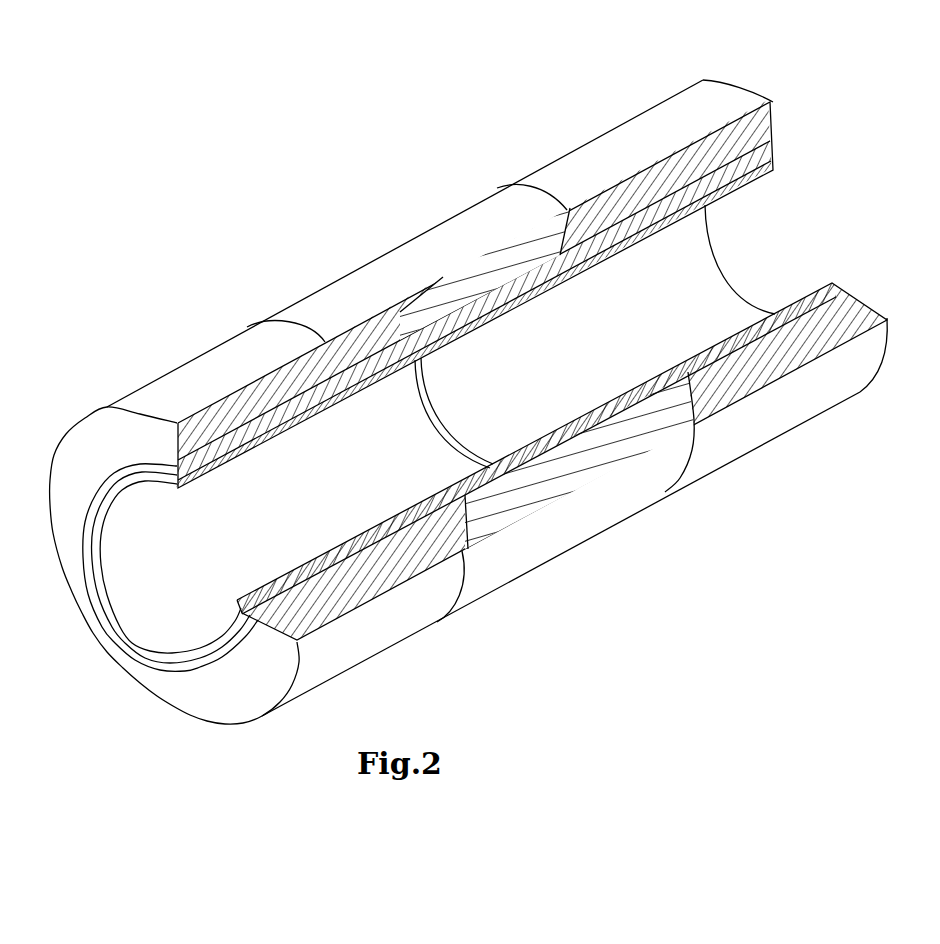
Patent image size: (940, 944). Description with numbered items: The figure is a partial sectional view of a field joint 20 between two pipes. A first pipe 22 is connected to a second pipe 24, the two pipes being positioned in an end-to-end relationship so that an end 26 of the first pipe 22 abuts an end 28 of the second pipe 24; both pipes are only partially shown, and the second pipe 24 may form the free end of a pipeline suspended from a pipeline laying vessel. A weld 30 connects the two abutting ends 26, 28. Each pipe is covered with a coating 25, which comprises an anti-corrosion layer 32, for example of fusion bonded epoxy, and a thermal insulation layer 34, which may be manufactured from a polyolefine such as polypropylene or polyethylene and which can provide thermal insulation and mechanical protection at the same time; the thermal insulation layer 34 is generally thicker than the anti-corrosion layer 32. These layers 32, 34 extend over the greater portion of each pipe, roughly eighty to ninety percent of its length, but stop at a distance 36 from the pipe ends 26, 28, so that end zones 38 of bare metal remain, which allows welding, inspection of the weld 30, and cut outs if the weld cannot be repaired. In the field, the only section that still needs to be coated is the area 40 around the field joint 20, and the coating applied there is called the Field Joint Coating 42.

The field joint 20 is at (368, 220).
The first pipe 22 is at (222, 418).
The second pipe 24 is at (665, 228).
The coating 25 is at (283, 290).
The end of the first pipe 26 is at (457, 310).
The end of the second pipe 28 is at (494, 325).
The weld 30 is at (547, 462).
The anti-corrosion layer 32 is at (138, 462).
The thermal insulation layer 34 is at (257, 390).
The distance 36 is at (445, 368).
The end zones 38 is at (512, 322).
The area around the field joint 40 is at (590, 470).
The Field Joint Coating 42 is at (433, 163).